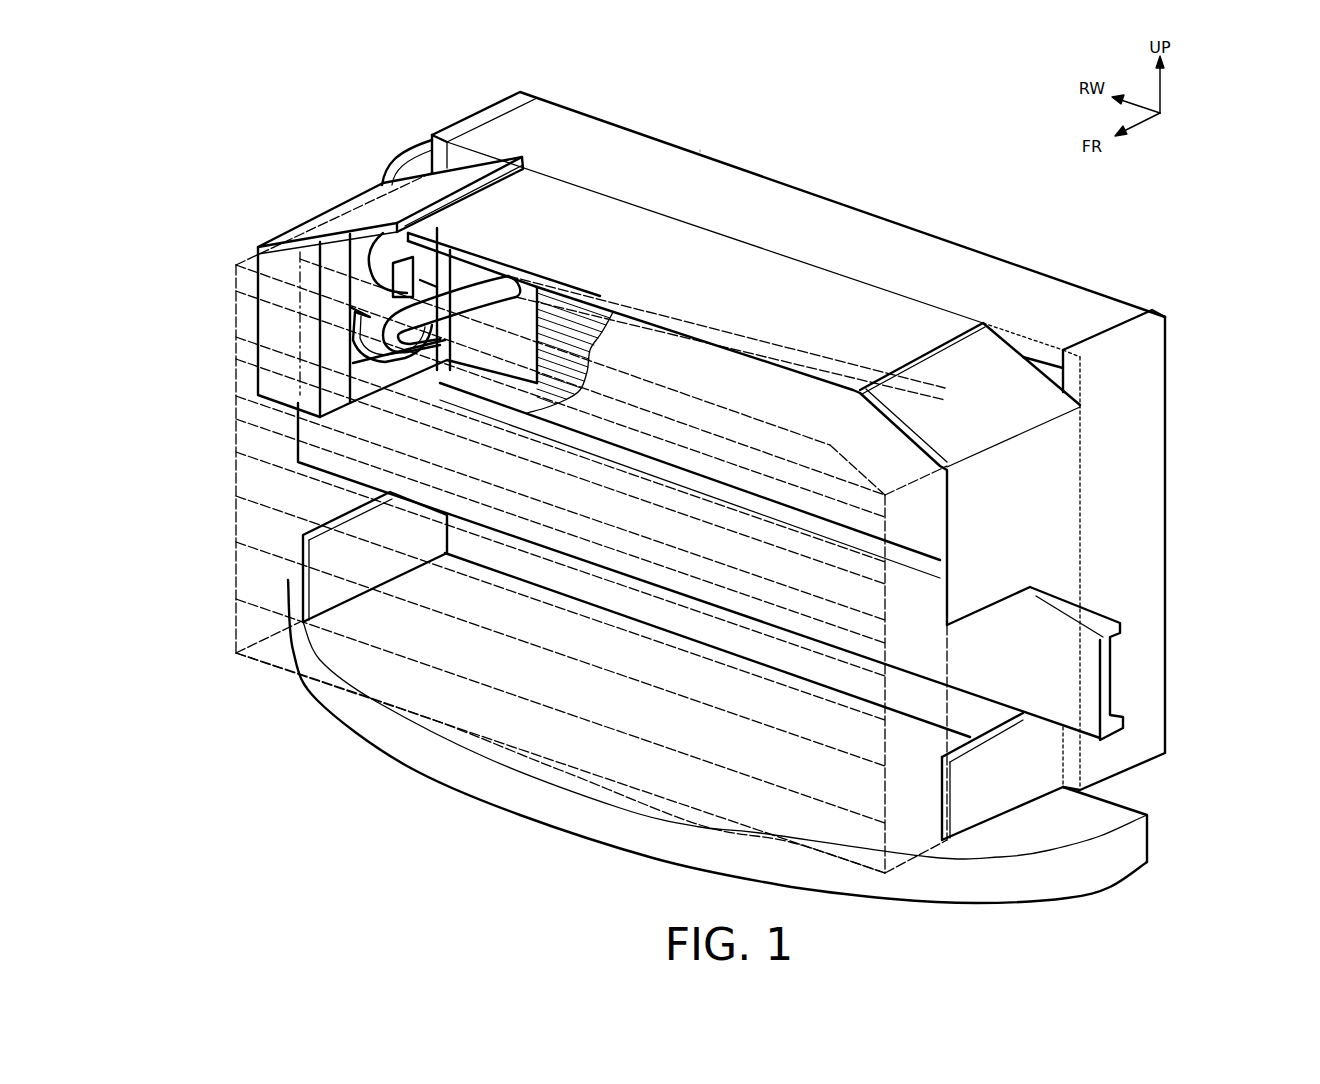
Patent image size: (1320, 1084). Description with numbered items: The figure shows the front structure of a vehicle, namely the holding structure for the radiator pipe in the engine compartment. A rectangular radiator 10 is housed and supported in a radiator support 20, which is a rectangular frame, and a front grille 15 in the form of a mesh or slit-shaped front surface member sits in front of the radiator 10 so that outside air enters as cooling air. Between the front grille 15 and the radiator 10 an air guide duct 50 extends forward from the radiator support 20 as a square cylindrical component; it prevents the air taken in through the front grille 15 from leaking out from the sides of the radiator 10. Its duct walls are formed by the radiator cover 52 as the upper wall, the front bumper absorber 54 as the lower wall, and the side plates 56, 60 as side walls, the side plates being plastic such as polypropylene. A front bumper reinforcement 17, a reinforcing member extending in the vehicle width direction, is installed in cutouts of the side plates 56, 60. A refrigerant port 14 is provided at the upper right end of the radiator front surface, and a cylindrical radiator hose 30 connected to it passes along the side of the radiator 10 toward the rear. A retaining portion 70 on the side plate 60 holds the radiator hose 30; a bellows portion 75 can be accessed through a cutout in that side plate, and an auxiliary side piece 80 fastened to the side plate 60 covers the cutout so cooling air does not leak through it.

The radiator 10 is at (590, 335).
The refrigerant port 14 is at (492, 278).
The front grille 15 is at (237, 483).
The front bumper reinforcement 17 is at (1085, 675).
The radiator support 20 is at (1048, 270).
The radiator hose 30 is at (455, 310).
The air guide duct 50 is at (806, 280).
The radiator cover 52 is at (697, 243).
The front bumper absorber 54 is at (1136, 850).
The side plate 56 is at (1053, 492).
The side plate 60 is at (330, 558).
The retaining portion 70 is at (363, 373).
The bellows portion 75 is at (360, 347).
The auxiliary side piece 80 is at (355, 222).